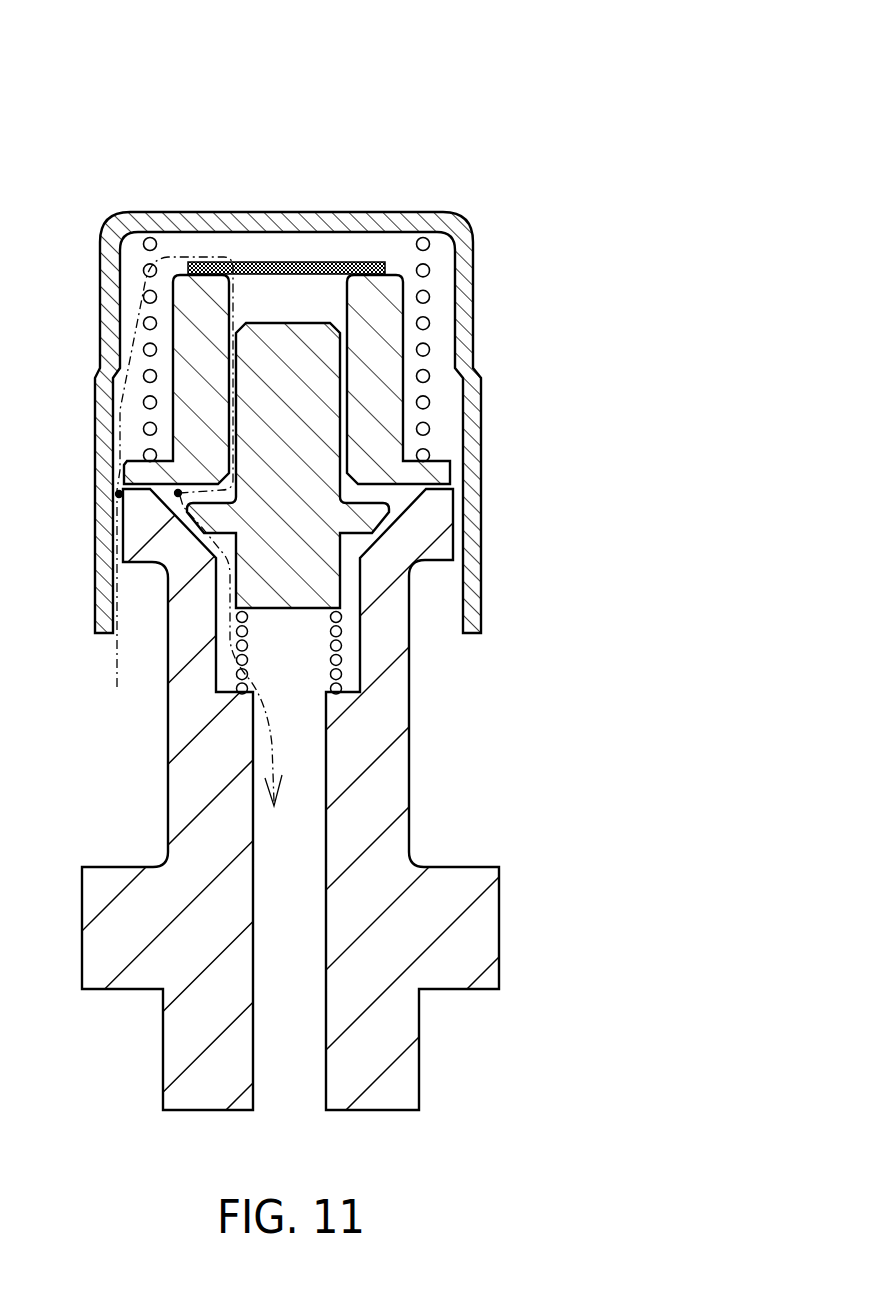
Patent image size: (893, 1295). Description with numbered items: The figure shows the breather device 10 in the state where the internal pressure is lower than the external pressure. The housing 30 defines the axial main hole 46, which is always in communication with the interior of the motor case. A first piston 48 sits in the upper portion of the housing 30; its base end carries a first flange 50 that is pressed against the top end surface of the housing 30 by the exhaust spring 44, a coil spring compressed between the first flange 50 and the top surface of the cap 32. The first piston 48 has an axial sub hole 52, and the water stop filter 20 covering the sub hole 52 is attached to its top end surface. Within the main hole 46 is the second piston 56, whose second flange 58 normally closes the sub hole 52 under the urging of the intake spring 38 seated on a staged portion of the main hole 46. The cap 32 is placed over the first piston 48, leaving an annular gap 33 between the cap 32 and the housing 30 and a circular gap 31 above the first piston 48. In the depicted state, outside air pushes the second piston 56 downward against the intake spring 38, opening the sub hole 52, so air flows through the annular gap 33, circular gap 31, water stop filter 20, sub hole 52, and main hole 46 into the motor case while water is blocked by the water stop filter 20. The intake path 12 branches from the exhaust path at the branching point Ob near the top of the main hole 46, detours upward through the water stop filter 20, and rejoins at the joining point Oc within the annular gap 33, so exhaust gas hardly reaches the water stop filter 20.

The breather device 10 is at (117, 137).
The intake path 12 is at (117, 660).
The water stop filter 20 is at (330, 262).
The housing 30 is at (381, 795).
The circular gap 31 is at (272, 250).
The cap 32 is at (482, 547).
The annular gap 33 is at (443, 407).
The intake spring 38 is at (338, 670).
The exhaust spring 44 is at (420, 262).
The main hole 46 is at (249, 712).
The first piston 48 is at (385, 338).
The first flange 50 is at (448, 470).
The sub hole 52 is at (240, 262).
The second piston 56 is at (323, 565).
The second flange 58 is at (372, 518).
The joining point Oc is at (117, 494).
The branching point Ob is at (177, 496).